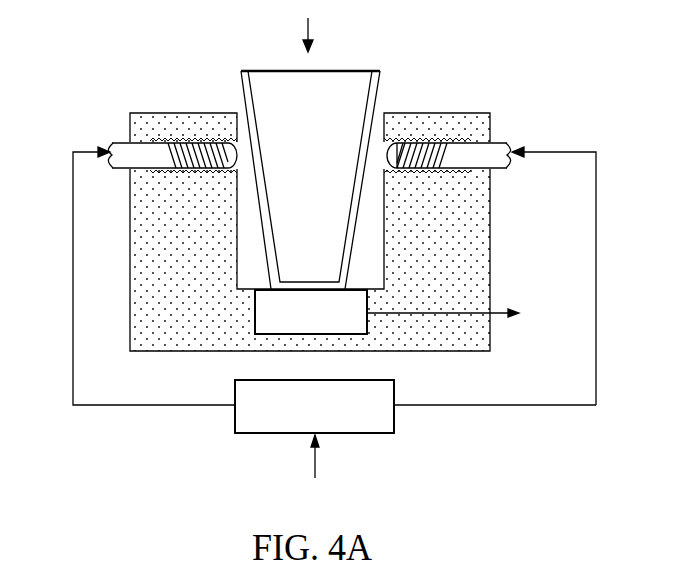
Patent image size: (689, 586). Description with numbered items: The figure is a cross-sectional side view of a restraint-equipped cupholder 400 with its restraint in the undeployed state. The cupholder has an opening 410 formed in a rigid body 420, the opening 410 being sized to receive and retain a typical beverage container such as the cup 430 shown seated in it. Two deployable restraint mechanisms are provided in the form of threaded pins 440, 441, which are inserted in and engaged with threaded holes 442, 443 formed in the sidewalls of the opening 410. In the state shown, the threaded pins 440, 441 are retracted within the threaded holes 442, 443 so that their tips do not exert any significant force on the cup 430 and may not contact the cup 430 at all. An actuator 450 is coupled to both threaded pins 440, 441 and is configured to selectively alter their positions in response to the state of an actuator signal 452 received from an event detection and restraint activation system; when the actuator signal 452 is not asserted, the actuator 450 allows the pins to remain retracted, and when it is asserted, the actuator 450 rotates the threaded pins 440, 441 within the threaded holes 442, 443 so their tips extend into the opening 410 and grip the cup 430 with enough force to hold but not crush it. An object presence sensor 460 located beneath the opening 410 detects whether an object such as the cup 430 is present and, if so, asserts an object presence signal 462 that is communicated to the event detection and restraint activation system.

The restraint-equipped cupholder 400 is at (316, 246).
The opening 410 is at (310, 26).
The rigid body 420 is at (492, 127).
The cup 430 is at (327, 71).
The threaded pin 440 is at (172, 106).
The threaded pin 441 is at (449, 106).
The threaded hole 442 is at (195, 140).
The threaded hole 443 is at (427, 140).
The actuator 450 is at (382, 433).
The actuator signal 452 is at (315, 458).
The object presence sensor 460 is at (255, 308).
The object presence signal 462 is at (498, 308).